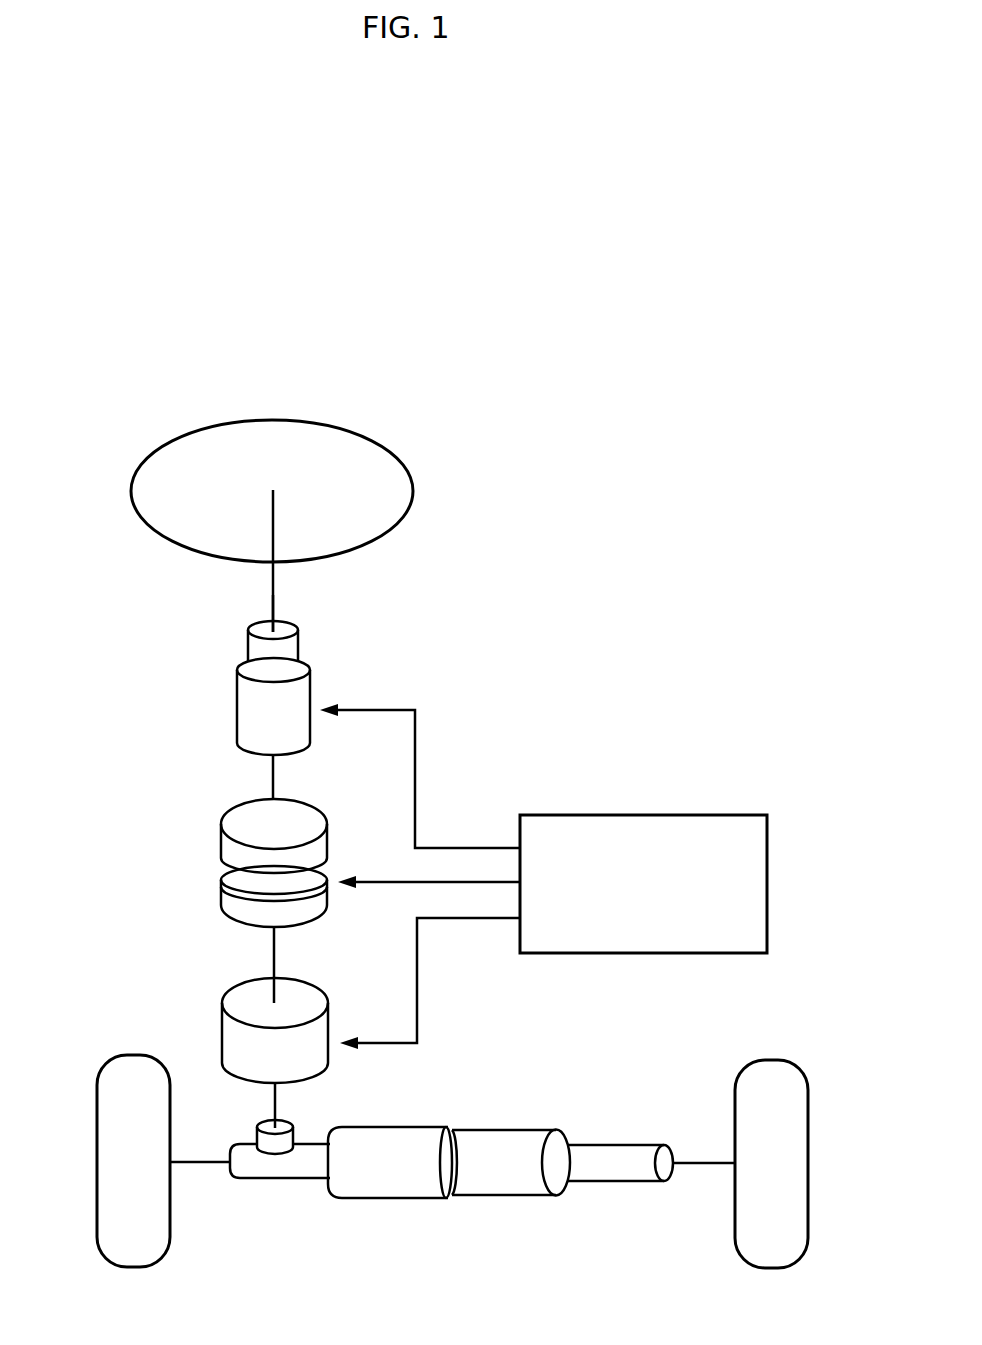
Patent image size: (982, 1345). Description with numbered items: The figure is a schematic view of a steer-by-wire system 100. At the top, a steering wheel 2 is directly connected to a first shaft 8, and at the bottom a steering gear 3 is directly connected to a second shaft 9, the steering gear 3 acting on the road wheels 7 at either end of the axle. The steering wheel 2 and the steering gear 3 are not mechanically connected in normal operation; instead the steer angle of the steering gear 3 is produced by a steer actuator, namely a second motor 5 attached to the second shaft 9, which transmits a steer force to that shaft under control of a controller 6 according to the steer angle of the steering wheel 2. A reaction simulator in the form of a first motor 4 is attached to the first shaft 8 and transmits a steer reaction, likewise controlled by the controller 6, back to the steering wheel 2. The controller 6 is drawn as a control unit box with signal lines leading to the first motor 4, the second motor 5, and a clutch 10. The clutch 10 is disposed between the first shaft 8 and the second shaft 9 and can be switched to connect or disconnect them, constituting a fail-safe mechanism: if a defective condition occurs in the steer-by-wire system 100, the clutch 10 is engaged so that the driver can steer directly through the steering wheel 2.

The steer-by-wire system 100 is at (540, 697).
The steering wheel 2 is at (343, 460).
The steering gear 3 is at (262, 1158).
The first motor 4 is at (292, 697).
The second motor 5 is at (238, 1052).
The controller 6 is at (715, 838).
The road wheels 7 is at (118, 1157).
The first shaft 8 is at (270, 593).
The second shaft 9 is at (277, 960).
The clutch 10 is at (203, 865).